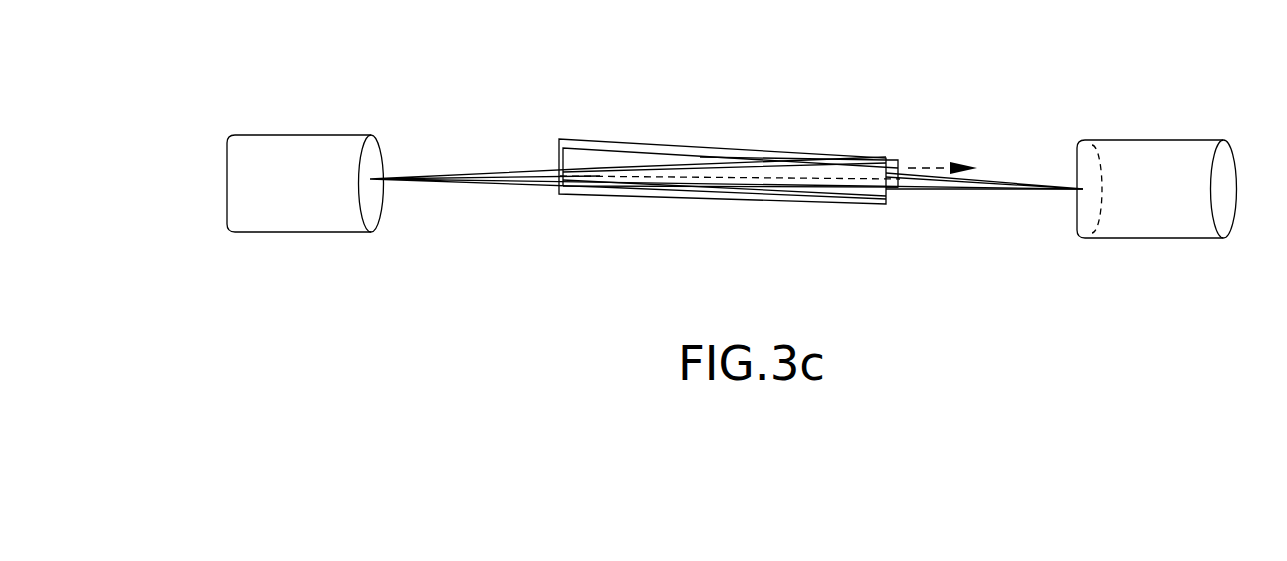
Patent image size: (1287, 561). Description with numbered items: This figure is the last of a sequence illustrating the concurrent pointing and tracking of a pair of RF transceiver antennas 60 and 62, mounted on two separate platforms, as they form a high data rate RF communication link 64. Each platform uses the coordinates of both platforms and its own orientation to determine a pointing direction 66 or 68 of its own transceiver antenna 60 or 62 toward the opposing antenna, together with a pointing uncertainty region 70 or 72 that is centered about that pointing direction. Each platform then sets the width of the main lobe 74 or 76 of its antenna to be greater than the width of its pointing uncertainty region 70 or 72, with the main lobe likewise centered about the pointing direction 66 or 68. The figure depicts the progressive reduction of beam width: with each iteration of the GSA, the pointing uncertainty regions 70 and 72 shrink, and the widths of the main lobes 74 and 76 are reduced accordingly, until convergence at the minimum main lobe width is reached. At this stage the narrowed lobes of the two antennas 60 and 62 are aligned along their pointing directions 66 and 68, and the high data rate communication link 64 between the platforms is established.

The RF transceiver antenna 60 is at (306, 134).
The RF transceiver antenna 62 is at (1195, 140).
The high data rate RF communication link 64 is at (673, 199).
The pointing direction 66 is at (680, 182).
The pointing direction 68 is at (924, 166).
The pointing uncertainty region 70 is at (618, 150).
The pointing uncertainty region 72 is at (882, 154).
The main lobe 74 is at (567, 138).
The main lobe 76 is at (858, 156).